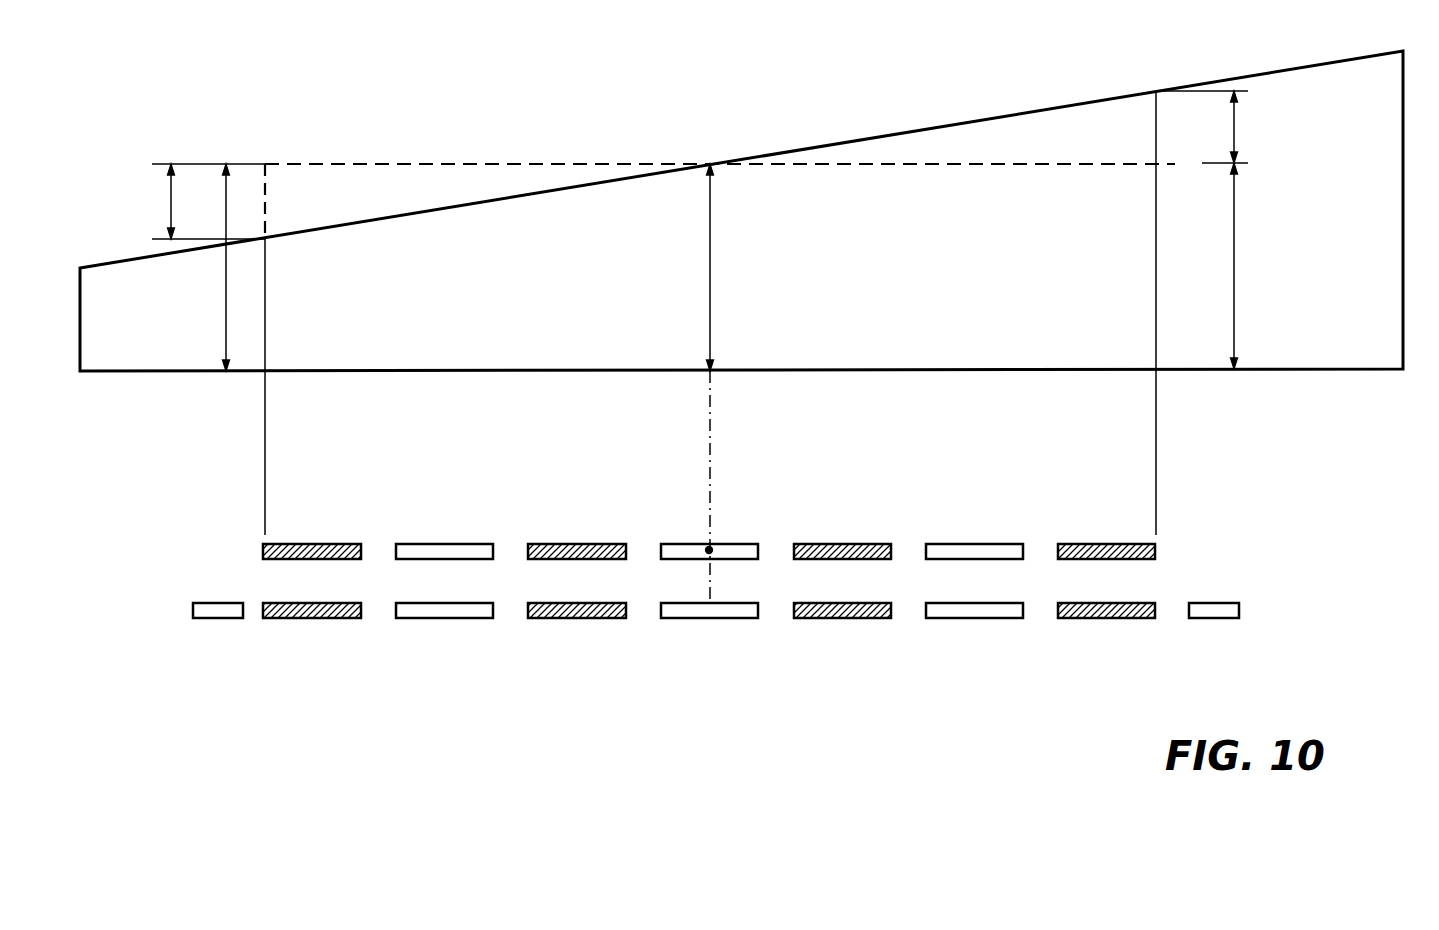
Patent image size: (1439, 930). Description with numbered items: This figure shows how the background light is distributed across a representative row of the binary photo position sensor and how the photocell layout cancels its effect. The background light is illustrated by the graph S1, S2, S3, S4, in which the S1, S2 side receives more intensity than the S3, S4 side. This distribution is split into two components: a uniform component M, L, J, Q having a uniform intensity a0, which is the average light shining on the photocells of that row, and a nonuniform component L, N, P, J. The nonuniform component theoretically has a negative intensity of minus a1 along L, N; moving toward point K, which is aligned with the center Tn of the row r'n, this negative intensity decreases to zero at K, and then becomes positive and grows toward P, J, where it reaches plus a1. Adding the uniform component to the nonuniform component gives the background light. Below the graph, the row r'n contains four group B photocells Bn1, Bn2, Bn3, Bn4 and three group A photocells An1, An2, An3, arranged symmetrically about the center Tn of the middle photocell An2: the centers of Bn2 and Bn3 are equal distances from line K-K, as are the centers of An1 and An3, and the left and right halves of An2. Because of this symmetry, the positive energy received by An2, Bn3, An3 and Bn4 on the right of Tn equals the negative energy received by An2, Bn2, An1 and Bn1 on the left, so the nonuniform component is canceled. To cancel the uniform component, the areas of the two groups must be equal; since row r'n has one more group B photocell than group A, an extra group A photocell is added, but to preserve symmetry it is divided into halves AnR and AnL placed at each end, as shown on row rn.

The corner S1 of background light graph S1 is at (1420, 53).
The corner S2 of background light graph S2 is at (1420, 368).
The corner S3 of background light graph S3 is at (60, 368).
The corner S4 of background light graph S4 is at (60, 265).
The point L is at (253, 145).
The point N is at (280, 219).
The point M is at (281, 351).
The point K is at (707, 145).
The point P is at (1151, 71).
The point J is at (1184, 163).
The point Q is at (1165, 351).
The uniform intensity a0 is at (723, 267).
The nonuniform intensity a1 is at (694, 165).
The row r'n is at (1280, 548).
The row rn is at (1277, 607).
The left half photocell AnL is at (218, 619).
The right half photocell AnR is at (1214, 619).
The photocell An1 is at (445, 543).
The photocell An2 is at (663, 543).
The photocell An3 is at (975, 543).
The photocell Bn1 is at (313, 543).
The photocell Bn2 is at (578, 543).
The photocell Bn3 is at (843, 543).
The photocell Bn4 is at (1107, 543).
The center Tn of row Tn is at (712, 550).